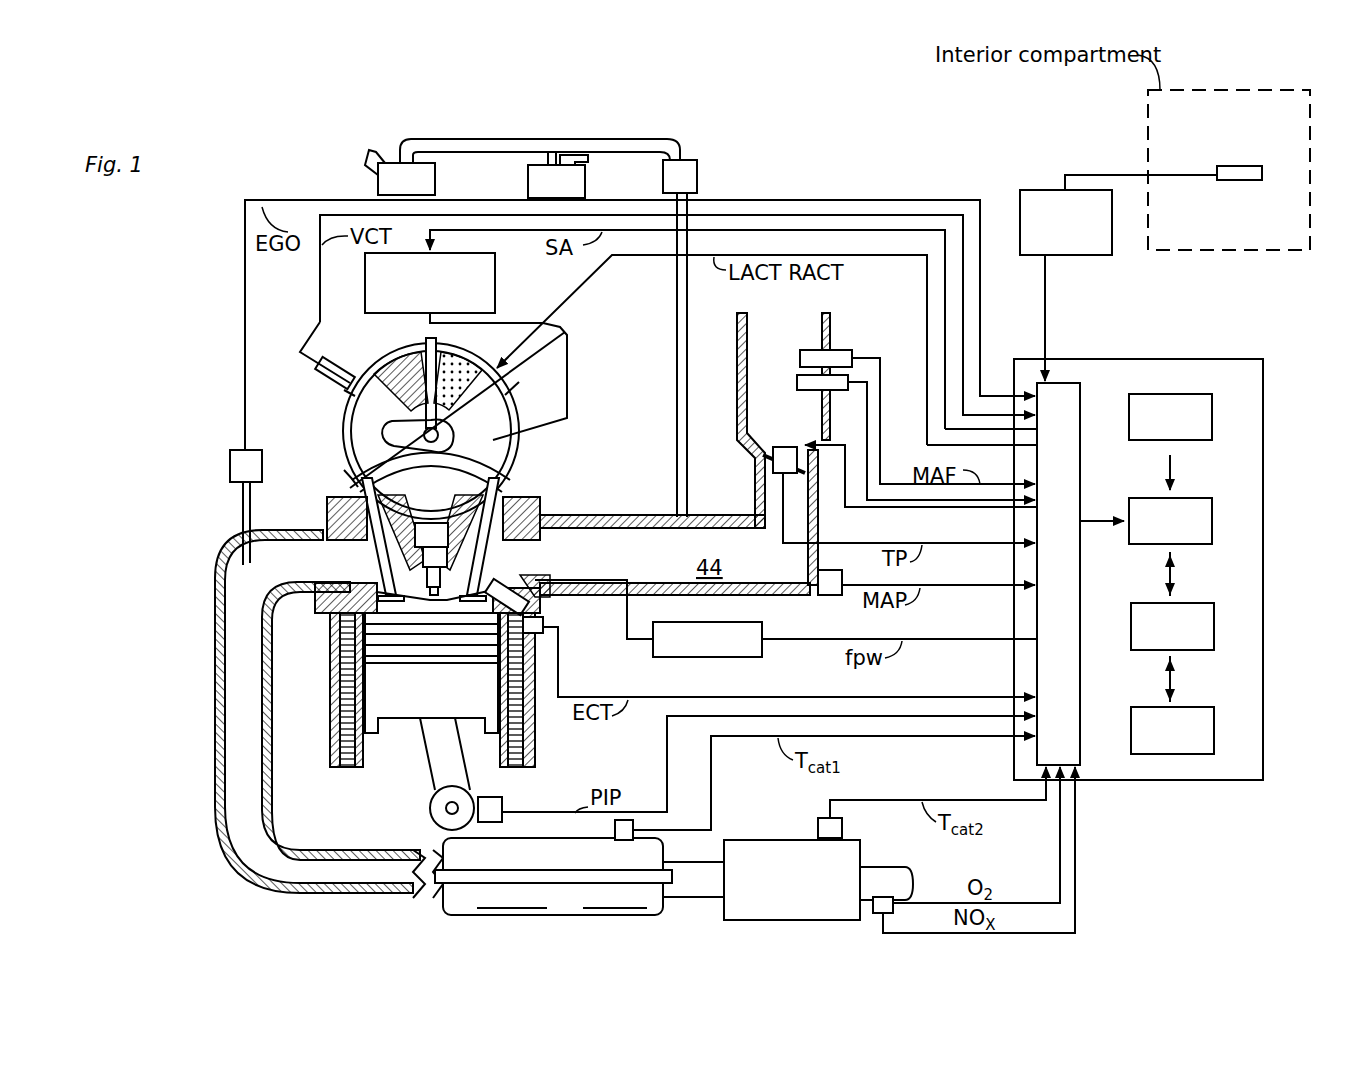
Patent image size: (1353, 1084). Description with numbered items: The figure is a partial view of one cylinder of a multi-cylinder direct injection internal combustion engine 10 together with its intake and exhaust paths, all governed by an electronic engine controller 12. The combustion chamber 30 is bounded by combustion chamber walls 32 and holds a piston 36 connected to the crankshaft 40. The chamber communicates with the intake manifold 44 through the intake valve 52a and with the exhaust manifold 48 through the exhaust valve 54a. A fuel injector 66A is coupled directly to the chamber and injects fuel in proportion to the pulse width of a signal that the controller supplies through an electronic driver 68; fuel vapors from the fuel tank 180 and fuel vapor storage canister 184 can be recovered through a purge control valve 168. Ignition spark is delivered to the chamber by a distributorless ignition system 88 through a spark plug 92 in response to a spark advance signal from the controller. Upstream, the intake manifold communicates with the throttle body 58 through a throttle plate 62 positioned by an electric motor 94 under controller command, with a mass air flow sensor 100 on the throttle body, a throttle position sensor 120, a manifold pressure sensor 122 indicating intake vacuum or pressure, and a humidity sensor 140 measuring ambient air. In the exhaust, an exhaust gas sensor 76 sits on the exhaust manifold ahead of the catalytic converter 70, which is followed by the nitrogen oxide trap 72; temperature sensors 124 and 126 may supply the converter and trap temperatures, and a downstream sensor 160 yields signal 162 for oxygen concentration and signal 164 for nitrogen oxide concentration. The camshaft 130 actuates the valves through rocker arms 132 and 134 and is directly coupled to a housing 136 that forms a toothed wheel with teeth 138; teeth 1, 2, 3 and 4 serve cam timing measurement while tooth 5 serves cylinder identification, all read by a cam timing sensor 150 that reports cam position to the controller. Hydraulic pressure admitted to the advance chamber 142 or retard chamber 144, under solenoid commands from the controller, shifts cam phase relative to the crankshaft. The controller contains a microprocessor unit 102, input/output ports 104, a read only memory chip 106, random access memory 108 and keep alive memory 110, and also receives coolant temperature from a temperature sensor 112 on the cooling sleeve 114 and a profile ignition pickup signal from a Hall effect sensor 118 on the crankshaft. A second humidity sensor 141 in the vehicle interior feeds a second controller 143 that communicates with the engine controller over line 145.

The tooth 1 is at (425, 342).
The tooth 2 is at (512, 392).
The tooth 3 is at (470, 535).
The tooth 4 is at (348, 473).
The tooth 5 is at (346, 394).
The direct injection internal combustion engine 10 is at (580, 436).
The electronic engine controller 12 is at (1213, 360).
The combustion chamber 30 is at (330, 673).
The combustion chamber walls 32 is at (395, 775).
The piston 36 is at (410, 725).
The crankshaft 40 is at (435, 815).
The intake manifold 44 is at (675, 555).
The exhaust manifold 48 is at (240, 595).
The intake valve 52a is at (475, 578).
The exhaust valve 54a is at (378, 578).
The throttle body 58 is at (745, 503).
The throttle plate 62 is at (778, 452).
The fuel injector 66A is at (535, 582).
The electronic driver 68 is at (720, 658).
The catalytic converter 70 is at (498, 845).
The NOx trap 72 is at (748, 840).
The exhaust gas sensor 76 is at (248, 450).
The distributorless ignition system 88 is at (496, 292).
The spark plug 92 is at (420, 540).
The electric motor 94 is at (800, 440).
The mass air flow sensor 100 is at (840, 350).
The microprocessor unit 102 is at (1182, 498).
The input/output ports 104 is at (1080, 422).
The read only memory chip 106 is at (1178, 394).
The random access memory 108 is at (1183, 603).
The keep alive memory 110 is at (1183, 707).
The temperature sensor 112 is at (545, 620).
The cooling sleeve 114 is at (540, 750).
The Hall effect sensor 118 is at (492, 805).
The throttle position sensor 120 is at (745, 480).
The manifold pressure sensor 122 is at (823, 596).
The temperature sensor 124 is at (615, 830).
The temperature sensor 126 is at (843, 833).
The camshaft 130 is at (410, 428).
The rocker arm 132 is at (366, 492).
The rocker arm 134 is at (492, 492).
The housing 136 is at (345, 440).
The teeth 138 is at (535, 377).
The humidity sensor 140 is at (800, 375).
The second humidity sensor 141 is at (1235, 165).
The advance chamber 142 is at (450, 355).
The second controller 143 is at (1040, 190).
The retard chamber 144 is at (400, 357).
The line 145 is at (1046, 320).
The cam timing sensor 150 is at (320, 380).
The sensor 160 is at (870, 913).
The signal 162 is at (1060, 870).
The signal 164 is at (1075, 870).
The purge control valve 168 is at (698, 186).
The fuel tank 180 is at (437, 185).
The fuel vapor storage canister 184 is at (586, 188).